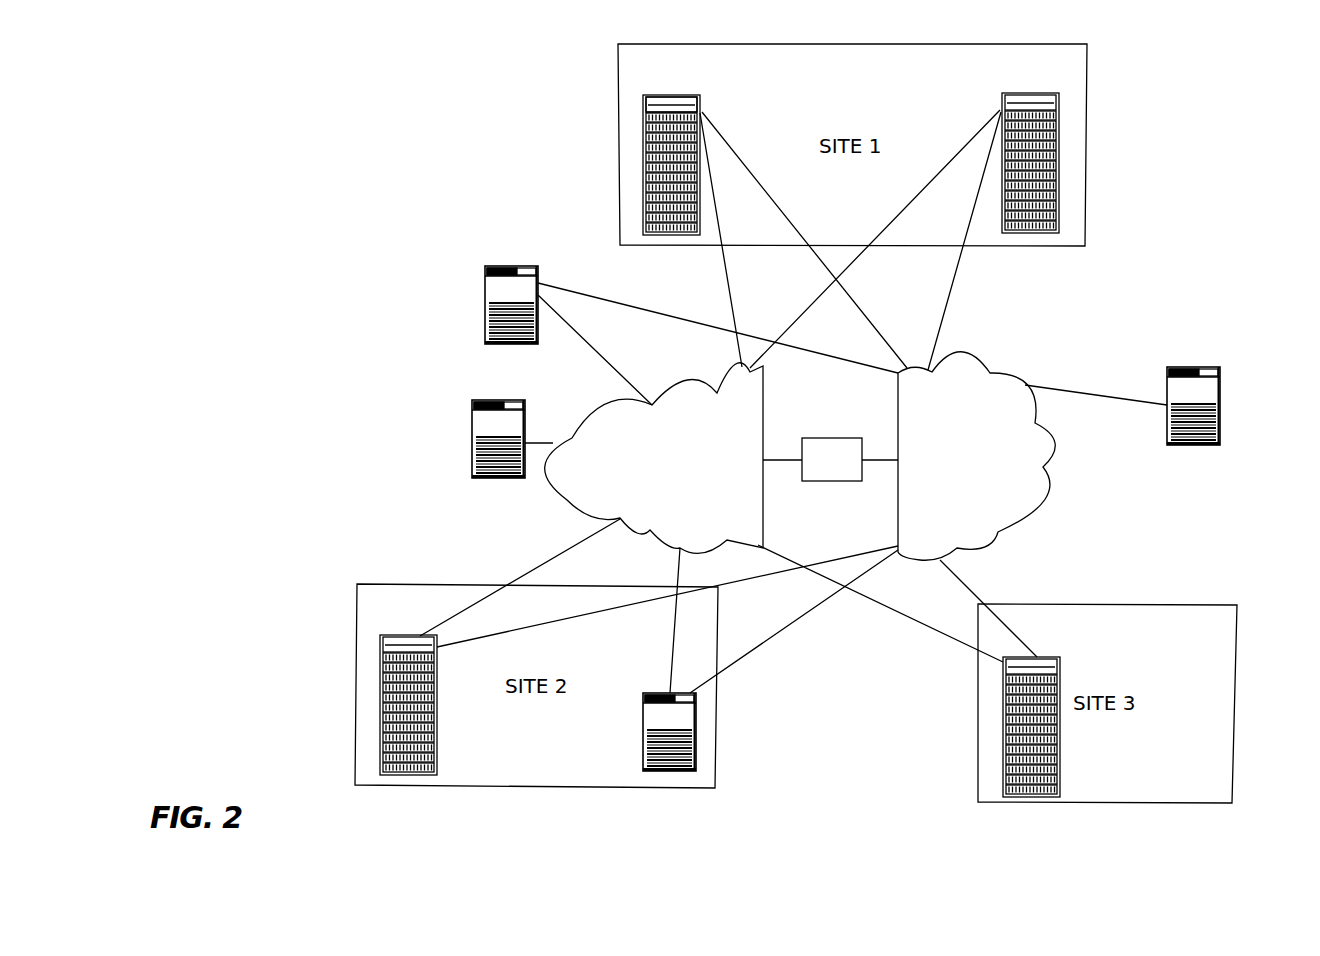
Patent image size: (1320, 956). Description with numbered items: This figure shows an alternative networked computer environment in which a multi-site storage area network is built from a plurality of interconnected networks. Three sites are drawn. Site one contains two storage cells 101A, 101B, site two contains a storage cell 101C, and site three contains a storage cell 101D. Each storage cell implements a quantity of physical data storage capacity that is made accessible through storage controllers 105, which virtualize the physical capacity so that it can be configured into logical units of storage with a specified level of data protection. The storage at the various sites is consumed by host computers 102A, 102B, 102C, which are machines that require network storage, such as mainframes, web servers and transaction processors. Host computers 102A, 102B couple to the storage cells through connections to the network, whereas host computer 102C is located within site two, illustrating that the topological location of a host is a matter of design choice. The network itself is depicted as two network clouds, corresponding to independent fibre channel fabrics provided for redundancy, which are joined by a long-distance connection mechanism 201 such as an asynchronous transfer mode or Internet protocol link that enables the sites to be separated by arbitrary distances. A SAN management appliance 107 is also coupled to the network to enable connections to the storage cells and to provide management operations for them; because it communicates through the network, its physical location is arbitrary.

The storage cell 101A is at (643, 148).
The storage cell 101B is at (1057, 158).
The storage cell 101C is at (380, 689).
The storage cell 101D is at (1003, 737).
The host computer 102A is at (484, 300).
The host computer 102B is at (1224, 409).
The host computer 102C is at (697, 733).
The storage controller 105 is at (643, 111).
The SAN management appliance 107 is at (472, 480).
The long-distance connection mechanism 201 is at (837, 482).